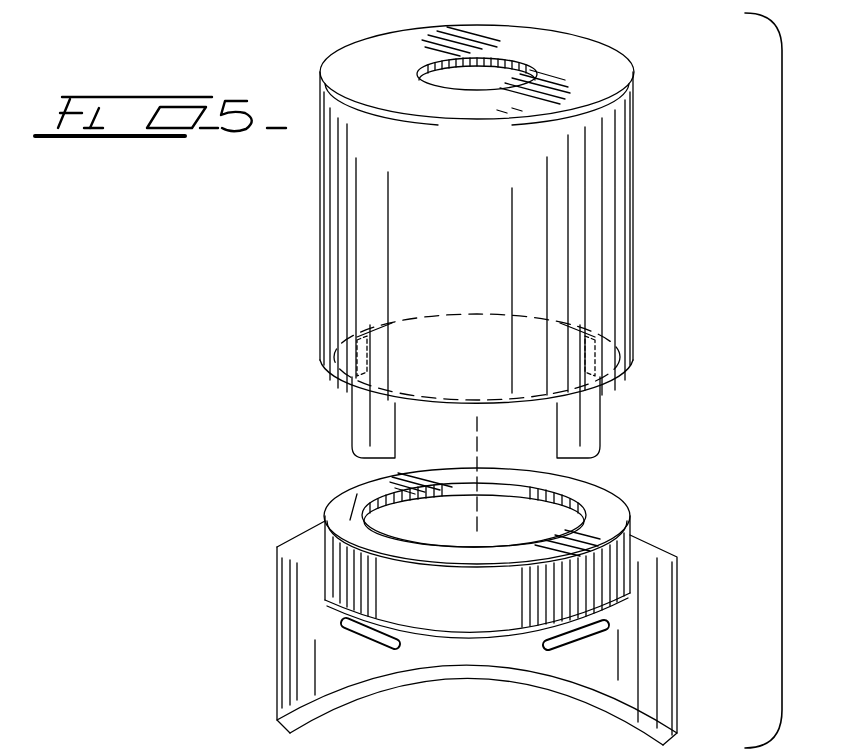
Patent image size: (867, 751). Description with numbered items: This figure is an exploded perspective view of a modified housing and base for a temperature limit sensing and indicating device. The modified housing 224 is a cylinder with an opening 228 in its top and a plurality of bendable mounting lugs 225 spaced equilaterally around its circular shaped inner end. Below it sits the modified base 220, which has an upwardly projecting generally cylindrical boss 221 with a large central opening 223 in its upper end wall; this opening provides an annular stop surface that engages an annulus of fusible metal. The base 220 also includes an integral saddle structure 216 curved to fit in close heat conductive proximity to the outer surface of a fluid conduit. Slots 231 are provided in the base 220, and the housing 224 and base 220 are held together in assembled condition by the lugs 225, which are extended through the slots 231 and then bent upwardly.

The saddle structure 216 is at (650, 620).
The base 220 is at (631, 529).
The cylindrical boss 221 is at (367, 567).
The central opening 223 is at (543, 500).
The housing 224 is at (636, 200).
The bendable mounting lugs 225 is at (633, 418).
The aperture in cap top 228 is at (503, 58).
The slots 231 is at (548, 652).